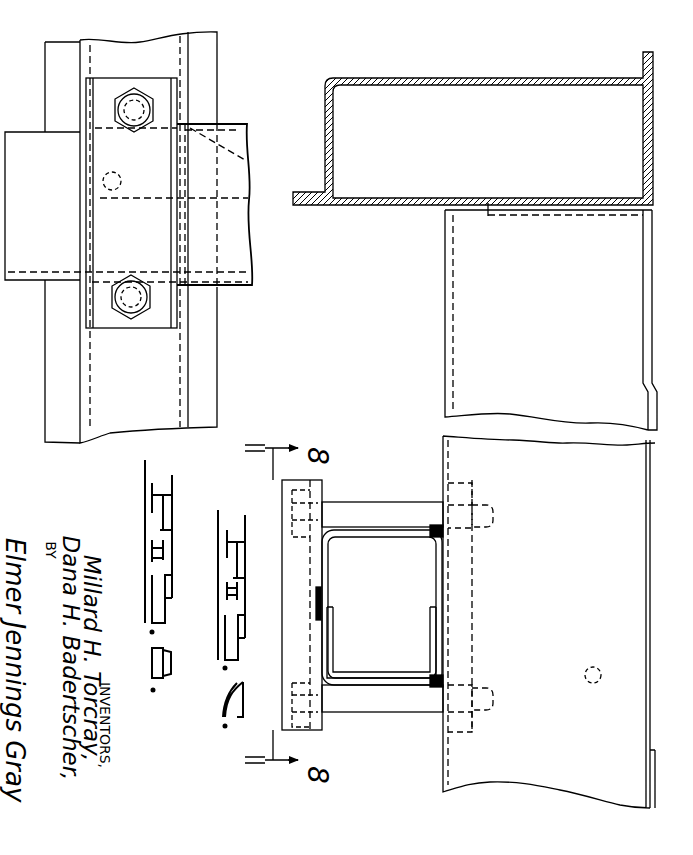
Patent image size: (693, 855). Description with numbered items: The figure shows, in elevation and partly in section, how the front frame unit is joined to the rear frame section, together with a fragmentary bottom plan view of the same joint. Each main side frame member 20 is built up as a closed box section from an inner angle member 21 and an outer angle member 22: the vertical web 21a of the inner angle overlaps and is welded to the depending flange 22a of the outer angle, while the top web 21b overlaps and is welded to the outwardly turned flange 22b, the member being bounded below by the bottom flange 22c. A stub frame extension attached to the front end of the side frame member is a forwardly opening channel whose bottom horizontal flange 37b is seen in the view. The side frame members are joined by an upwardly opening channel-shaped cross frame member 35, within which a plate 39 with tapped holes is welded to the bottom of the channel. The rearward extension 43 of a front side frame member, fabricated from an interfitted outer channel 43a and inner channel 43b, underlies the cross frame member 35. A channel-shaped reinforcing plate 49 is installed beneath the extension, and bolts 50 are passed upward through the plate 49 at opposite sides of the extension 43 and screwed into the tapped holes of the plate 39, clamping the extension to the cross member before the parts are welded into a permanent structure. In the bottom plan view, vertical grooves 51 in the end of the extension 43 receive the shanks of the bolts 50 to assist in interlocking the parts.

In FIG. 7, the side frame member 20 is at (516, 76).
In FIG. 7, the inner angle member 21 is at (653, 160).
In FIG. 7, the vertical web 21a is at (413, 207).
In FIG. 7, the top web 21b is at (643, 130).
In FIG. 7, the outer angle member 22 is at (460, 78).
In FIG. 7, the depending flange 22a is at (303, 192).
In FIG. 7, the outwardly turned flange 22b is at (642, 63).
In FIG. 7, the bottom flange 22c is at (333, 118).
In FIG. 8, the cross frame member 35 is at (208, 347).
In FIG. 7, the cross frame member 35 is at (642, 572).
In FIG. 7, the bottom horizontal flange 37b is at (660, 386).
In FIG. 7, the plate 39 is at (473, 563).
In FIG. 8, the rearward extension 43 is at (242, 284).
In FIG. 7, the rearward extension 43 is at (428, 645).
In FIG. 7, the outer channel 43a is at (390, 537).
In FIG. 7, the inner channel 43b is at (380, 676).
In FIG. 8, the reinforcing plate 49 is at (157, 328).
In FIG. 7, the reinforcing plate 49 is at (284, 600).
In FIG. 8, the bolt 50 is at (129, 316).
In FIG. 7, the bolt 50 is at (388, 503).
In FIG. 8, the vertical groove 51 is at (160, 135).